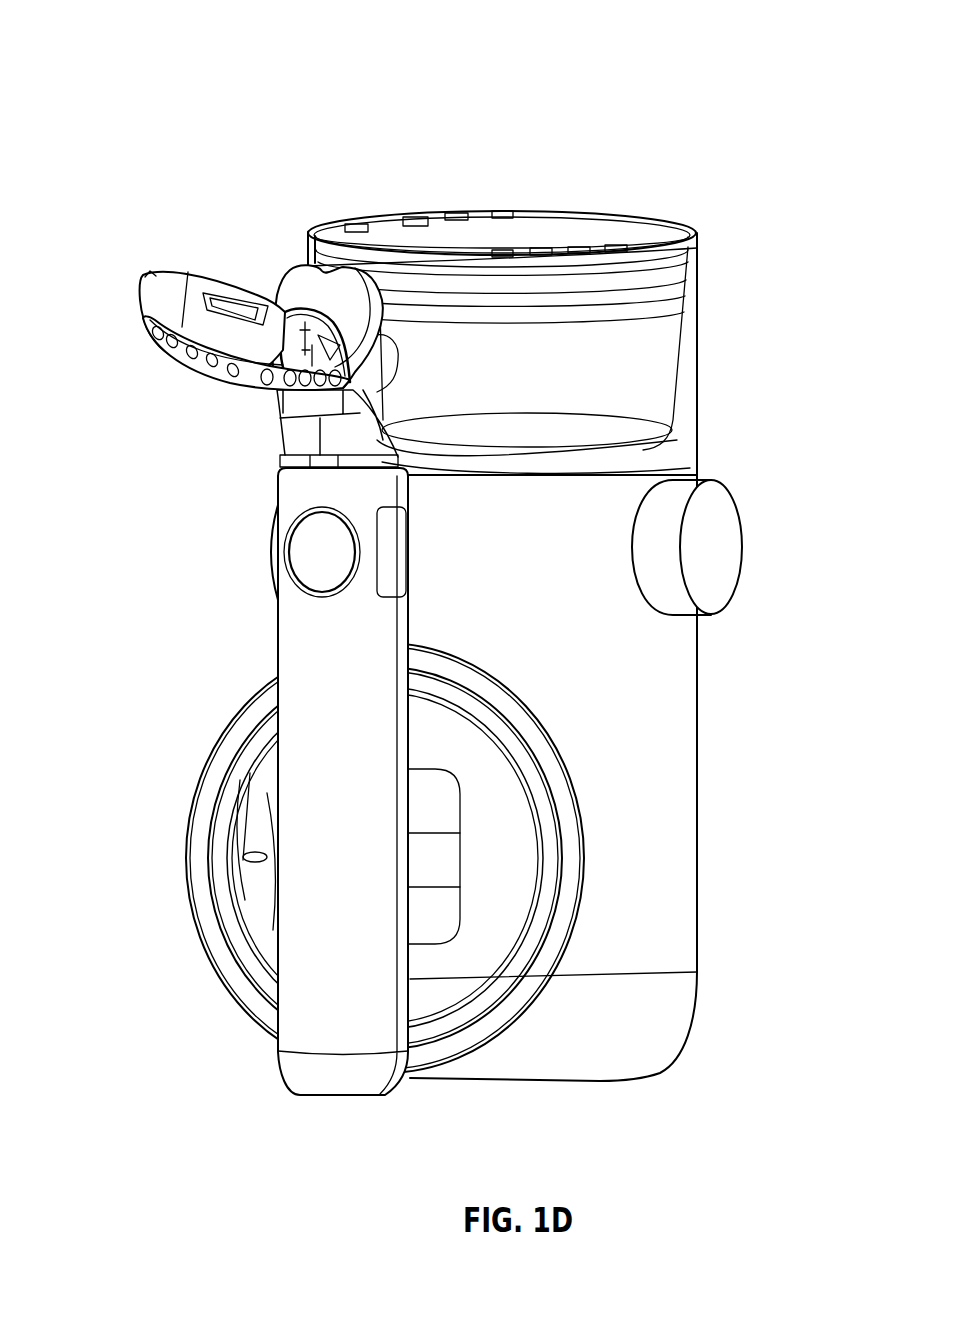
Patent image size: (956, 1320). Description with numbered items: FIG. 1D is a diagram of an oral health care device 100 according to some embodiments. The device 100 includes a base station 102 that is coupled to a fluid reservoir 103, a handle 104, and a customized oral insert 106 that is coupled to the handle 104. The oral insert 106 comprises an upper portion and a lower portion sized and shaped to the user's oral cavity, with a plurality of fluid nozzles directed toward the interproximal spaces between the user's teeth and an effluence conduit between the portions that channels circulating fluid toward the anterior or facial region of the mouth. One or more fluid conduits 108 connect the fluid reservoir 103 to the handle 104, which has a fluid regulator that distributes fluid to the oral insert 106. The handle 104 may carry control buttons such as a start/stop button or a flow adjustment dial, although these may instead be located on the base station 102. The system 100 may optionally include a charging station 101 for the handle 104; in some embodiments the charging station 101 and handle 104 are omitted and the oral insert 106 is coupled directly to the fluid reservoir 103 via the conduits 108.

The oral health care device 100 is at (215, 78).
The charging station 101 is at (475, 910).
The base station 102 is at (772, 291).
The fluid reservoir 103 is at (700, 430).
The handle 104 is at (365, 796).
The oral insert 106 is at (148, 248).
The fluid conduits 108 is at (160, 826).